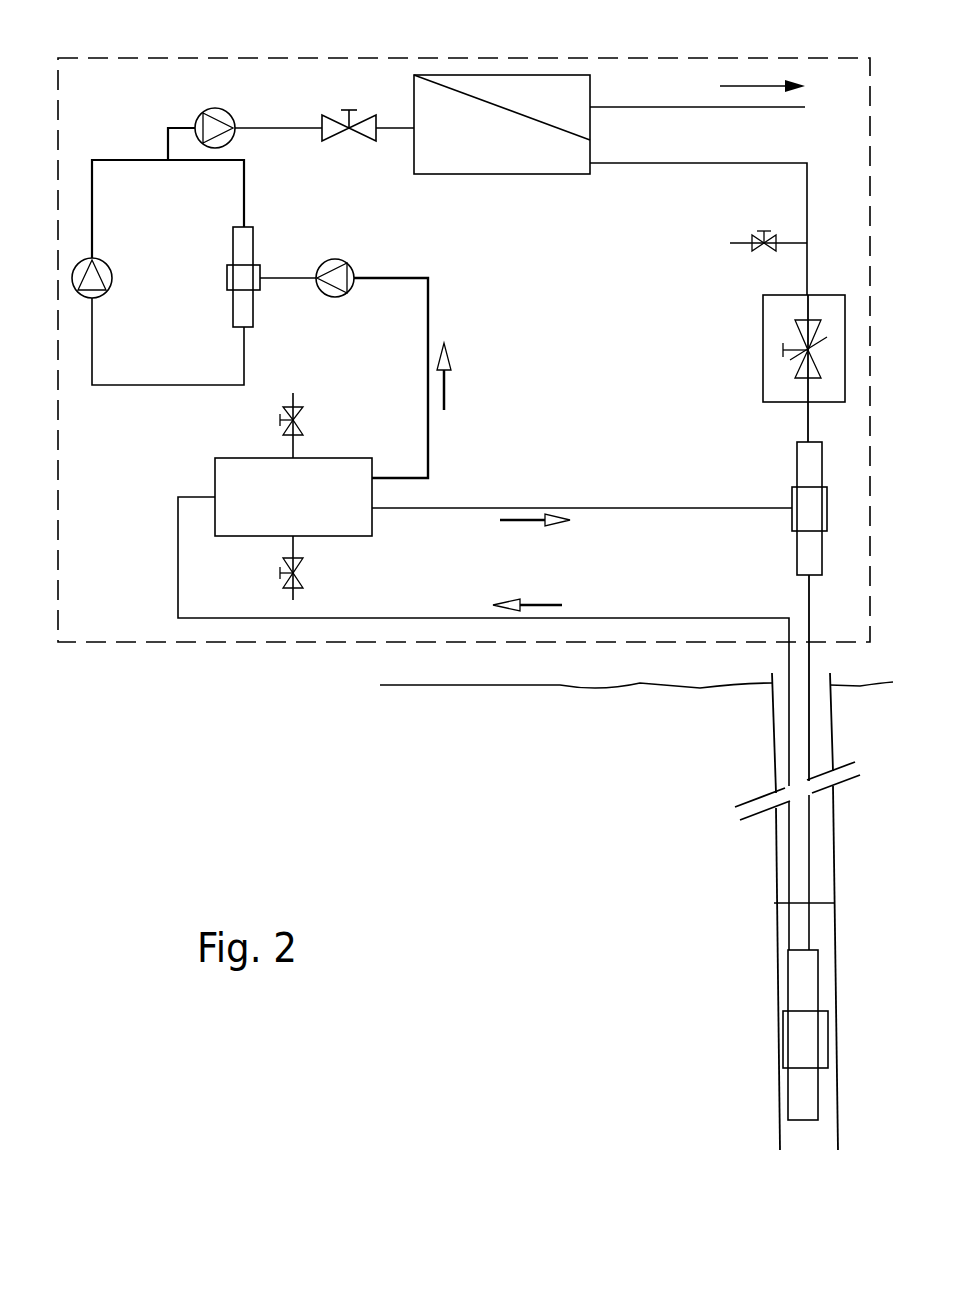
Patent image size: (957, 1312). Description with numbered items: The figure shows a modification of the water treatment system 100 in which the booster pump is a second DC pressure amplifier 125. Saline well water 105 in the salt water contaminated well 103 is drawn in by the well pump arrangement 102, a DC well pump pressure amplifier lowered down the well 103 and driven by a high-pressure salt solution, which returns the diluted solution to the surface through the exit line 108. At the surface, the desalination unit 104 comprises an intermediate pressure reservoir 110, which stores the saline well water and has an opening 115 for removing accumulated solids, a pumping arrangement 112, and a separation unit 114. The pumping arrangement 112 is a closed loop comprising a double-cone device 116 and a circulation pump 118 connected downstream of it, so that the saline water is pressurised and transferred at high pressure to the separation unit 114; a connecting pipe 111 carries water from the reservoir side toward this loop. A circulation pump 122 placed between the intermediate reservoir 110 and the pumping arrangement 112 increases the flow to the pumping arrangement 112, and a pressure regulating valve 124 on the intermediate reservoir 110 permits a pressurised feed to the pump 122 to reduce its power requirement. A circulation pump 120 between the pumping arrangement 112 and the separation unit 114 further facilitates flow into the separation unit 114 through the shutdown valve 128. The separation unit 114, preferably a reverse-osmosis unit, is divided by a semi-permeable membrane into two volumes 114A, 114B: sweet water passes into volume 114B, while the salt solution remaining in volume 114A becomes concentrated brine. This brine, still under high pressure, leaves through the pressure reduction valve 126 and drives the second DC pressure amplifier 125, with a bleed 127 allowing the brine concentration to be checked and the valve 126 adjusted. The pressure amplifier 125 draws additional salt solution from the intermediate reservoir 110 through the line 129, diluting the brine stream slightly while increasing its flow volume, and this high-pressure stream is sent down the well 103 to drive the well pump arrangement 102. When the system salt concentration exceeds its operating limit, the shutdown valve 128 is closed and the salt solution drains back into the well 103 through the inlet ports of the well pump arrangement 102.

The water treatment system 100 is at (213, 784).
The well pump arrangement 102 is at (782, 1040).
The well 103 is at (772, 727).
The desalination unit 104 is at (363, 58).
The well water 105 is at (782, 920).
The exit line 108 is at (557, 618).
The intermediate pressure reservoir 110 is at (333, 537).
The supply pipe 111 is at (428, 455).
The pumping arrangement 112 is at (226, 277).
The separation unit 114 is at (610, 150).
The volume 114A is at (467, 138).
The volume 114B is at (547, 96).
The opening 115 is at (288, 580).
The double-cone device 116 is at (243, 227).
The circulation pump 118 is at (90, 258).
The circulation pump 120 is at (232, 127).
The circulation pump 122 is at (336, 259).
The pressure regulating valve 124 is at (290, 422).
The second DC pressure amplifier 125 is at (797, 557).
The pressure reduction valve 126 is at (813, 296).
The bleed 127 is at (757, 238).
The shutdown valve 128 is at (352, 128).
The line 129 is at (647, 508).